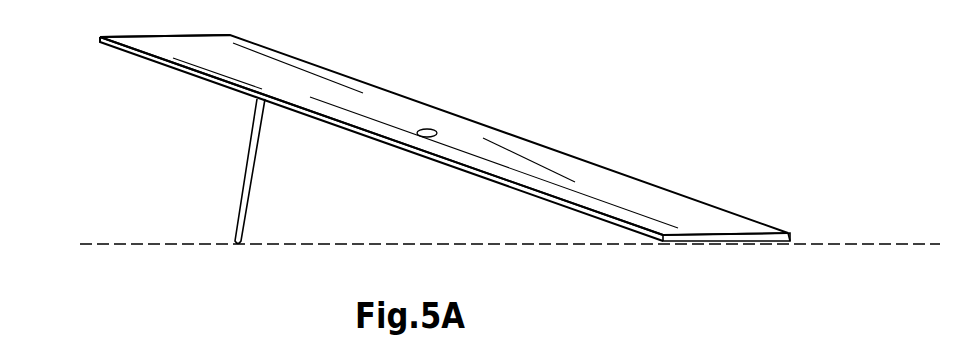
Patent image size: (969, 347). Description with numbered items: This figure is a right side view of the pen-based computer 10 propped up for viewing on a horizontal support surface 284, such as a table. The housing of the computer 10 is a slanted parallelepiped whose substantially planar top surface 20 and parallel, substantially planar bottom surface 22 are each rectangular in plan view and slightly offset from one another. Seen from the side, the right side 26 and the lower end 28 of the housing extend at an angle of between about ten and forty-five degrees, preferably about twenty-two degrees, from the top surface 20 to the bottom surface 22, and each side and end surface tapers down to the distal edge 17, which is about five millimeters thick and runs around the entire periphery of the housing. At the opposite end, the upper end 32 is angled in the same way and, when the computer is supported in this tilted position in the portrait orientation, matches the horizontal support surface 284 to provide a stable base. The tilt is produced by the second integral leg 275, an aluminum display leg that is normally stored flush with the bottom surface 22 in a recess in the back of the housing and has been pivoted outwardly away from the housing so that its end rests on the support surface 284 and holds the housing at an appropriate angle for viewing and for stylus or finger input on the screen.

The ramp assembly 10 is at (322, 54).
The top surface 20 is at (368, 82).
The bottom surface 22 is at (320, 122).
The right side 26 is at (428, 129).
The lower end 28 is at (155, 35).
The distal edge 17 is at (792, 237).
The upper end 32 is at (710, 243).
The second integral leg 275 is at (232, 172).
The horizontal support surface 284 is at (492, 244).